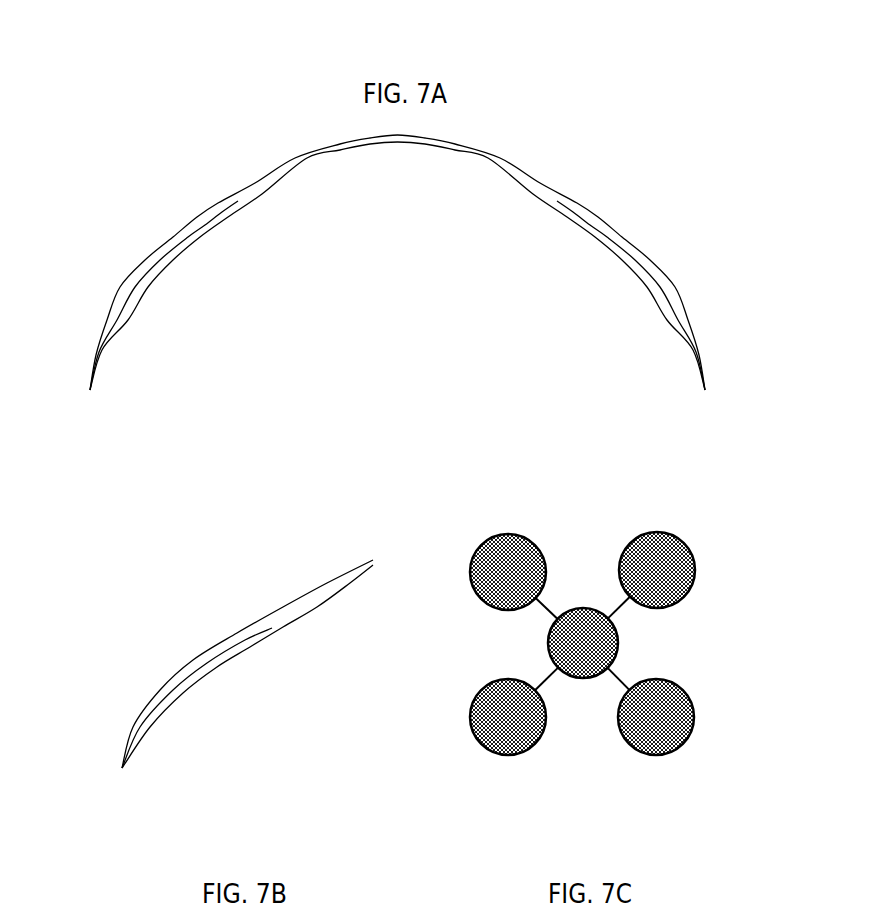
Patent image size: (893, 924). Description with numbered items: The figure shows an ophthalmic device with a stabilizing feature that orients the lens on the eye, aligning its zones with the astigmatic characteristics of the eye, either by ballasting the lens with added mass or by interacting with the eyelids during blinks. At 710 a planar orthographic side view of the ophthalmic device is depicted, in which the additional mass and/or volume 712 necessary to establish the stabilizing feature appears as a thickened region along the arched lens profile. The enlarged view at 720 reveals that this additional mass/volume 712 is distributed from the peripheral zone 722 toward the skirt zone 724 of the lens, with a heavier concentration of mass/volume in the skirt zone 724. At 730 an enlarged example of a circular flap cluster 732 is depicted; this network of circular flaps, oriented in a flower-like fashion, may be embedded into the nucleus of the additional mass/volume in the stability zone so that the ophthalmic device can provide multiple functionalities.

In FIG. 7A, the planar orthographic side view of the ophthalmic device 710 is at (400, 283).
In FIG. 7A, the additional mass and/or volume 712 is at (152, 255).
In FIG. 7B, the additional mass and/or volume 712 is at (241, 640).
In FIG. 7B, the view of the additional mass/volume distribution 720 is at (241, 682).
In FIG. 7B, the peripheral zone 722 is at (320, 565).
In FIG. 7B, the skirt zone 724 is at (139, 752).
In FIG. 7C, the enlarged example of the circular flap cluster 730 is at (614, 692).
In FIG. 7C, the circular flap cluster 732 is at (657, 681).